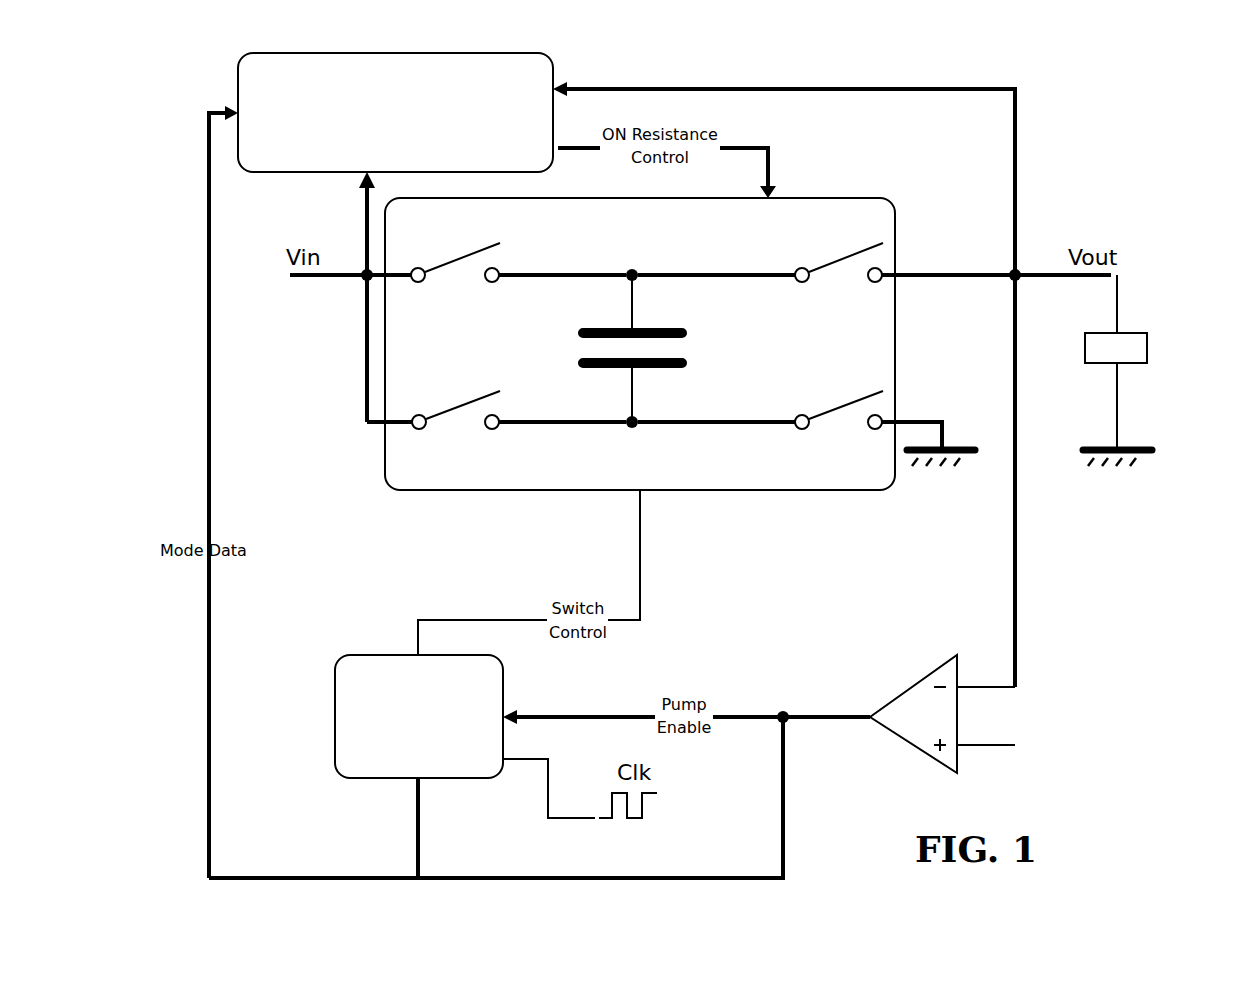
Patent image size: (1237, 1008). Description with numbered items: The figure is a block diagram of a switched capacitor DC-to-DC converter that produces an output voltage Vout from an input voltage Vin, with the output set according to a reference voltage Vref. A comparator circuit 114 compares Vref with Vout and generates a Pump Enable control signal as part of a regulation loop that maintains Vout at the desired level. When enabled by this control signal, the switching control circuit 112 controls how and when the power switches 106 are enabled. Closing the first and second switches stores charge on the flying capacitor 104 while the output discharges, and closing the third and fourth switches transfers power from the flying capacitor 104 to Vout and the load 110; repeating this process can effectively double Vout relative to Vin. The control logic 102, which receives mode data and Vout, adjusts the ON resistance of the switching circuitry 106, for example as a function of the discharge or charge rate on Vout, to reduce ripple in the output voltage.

The control logic 102 is at (527, 57).
The flying capacitor 104 is at (650, 331).
The power switches 106 is at (877, 196).
The load 110 is at (1135, 340).
The switching control circuit 112 is at (494, 684).
The comparator circuit 114 is at (948, 663).